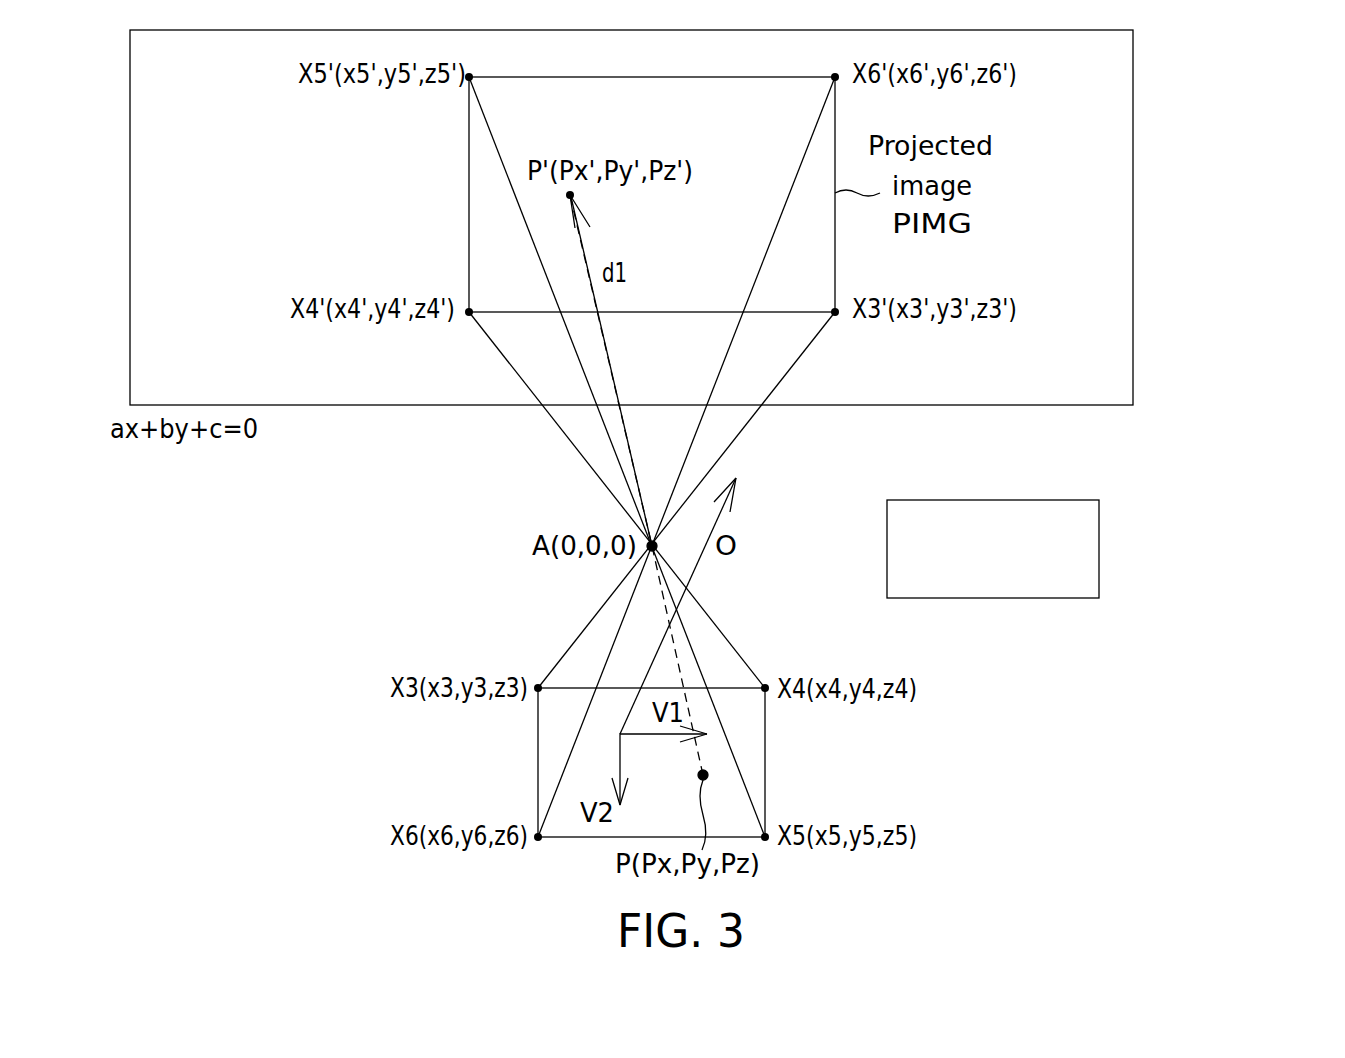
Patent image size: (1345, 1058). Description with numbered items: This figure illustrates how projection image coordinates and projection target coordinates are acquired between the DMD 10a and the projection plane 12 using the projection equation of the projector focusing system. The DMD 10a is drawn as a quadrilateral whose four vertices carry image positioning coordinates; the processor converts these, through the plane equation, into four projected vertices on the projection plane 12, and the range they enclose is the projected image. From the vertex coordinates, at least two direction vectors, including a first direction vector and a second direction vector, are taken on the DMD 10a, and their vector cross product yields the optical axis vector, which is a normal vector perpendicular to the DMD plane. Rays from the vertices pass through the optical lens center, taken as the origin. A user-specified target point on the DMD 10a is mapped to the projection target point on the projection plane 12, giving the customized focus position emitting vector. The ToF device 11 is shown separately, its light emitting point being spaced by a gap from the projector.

The projection plane 12 is at (1133, 217).
The ToF device 11 is at (1057, 585).
The DMD 10a is at (765, 760).